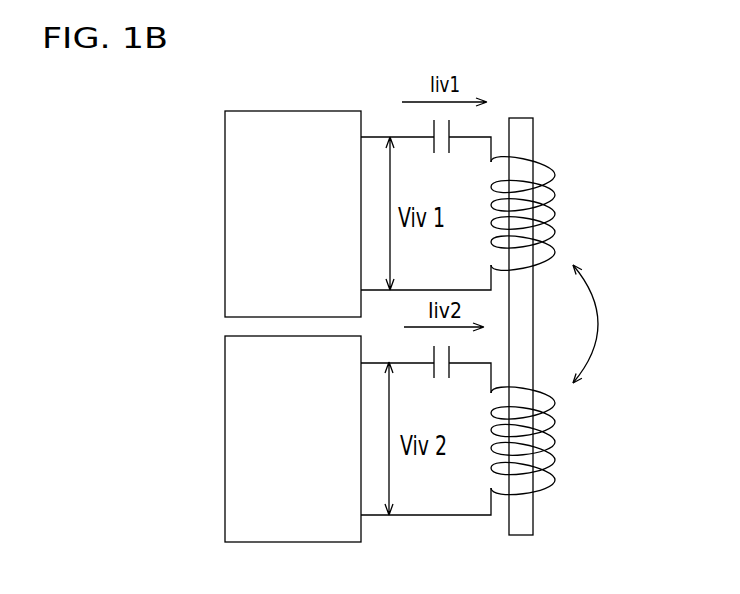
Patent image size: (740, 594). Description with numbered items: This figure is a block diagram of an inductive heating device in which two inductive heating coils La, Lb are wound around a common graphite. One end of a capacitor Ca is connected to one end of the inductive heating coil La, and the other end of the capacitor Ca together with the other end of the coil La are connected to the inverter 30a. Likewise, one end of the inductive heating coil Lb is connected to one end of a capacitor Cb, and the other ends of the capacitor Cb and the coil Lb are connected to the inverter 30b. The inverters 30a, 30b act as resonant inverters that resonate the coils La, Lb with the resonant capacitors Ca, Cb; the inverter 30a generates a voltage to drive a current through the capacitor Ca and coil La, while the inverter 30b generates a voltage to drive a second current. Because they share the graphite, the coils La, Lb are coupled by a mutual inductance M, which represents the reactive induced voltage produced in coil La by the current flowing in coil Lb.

The inverter 30a is at (225, 215).
The inverter 30b is at (225, 438).
The capacitor Ca is at (439, 153).
The capacitor Cb is at (439, 378).
The inductive heating coil La is at (540, 214).
The inductive heating coil Lb is at (542, 441).
The mutual inductance M is at (600, 324).